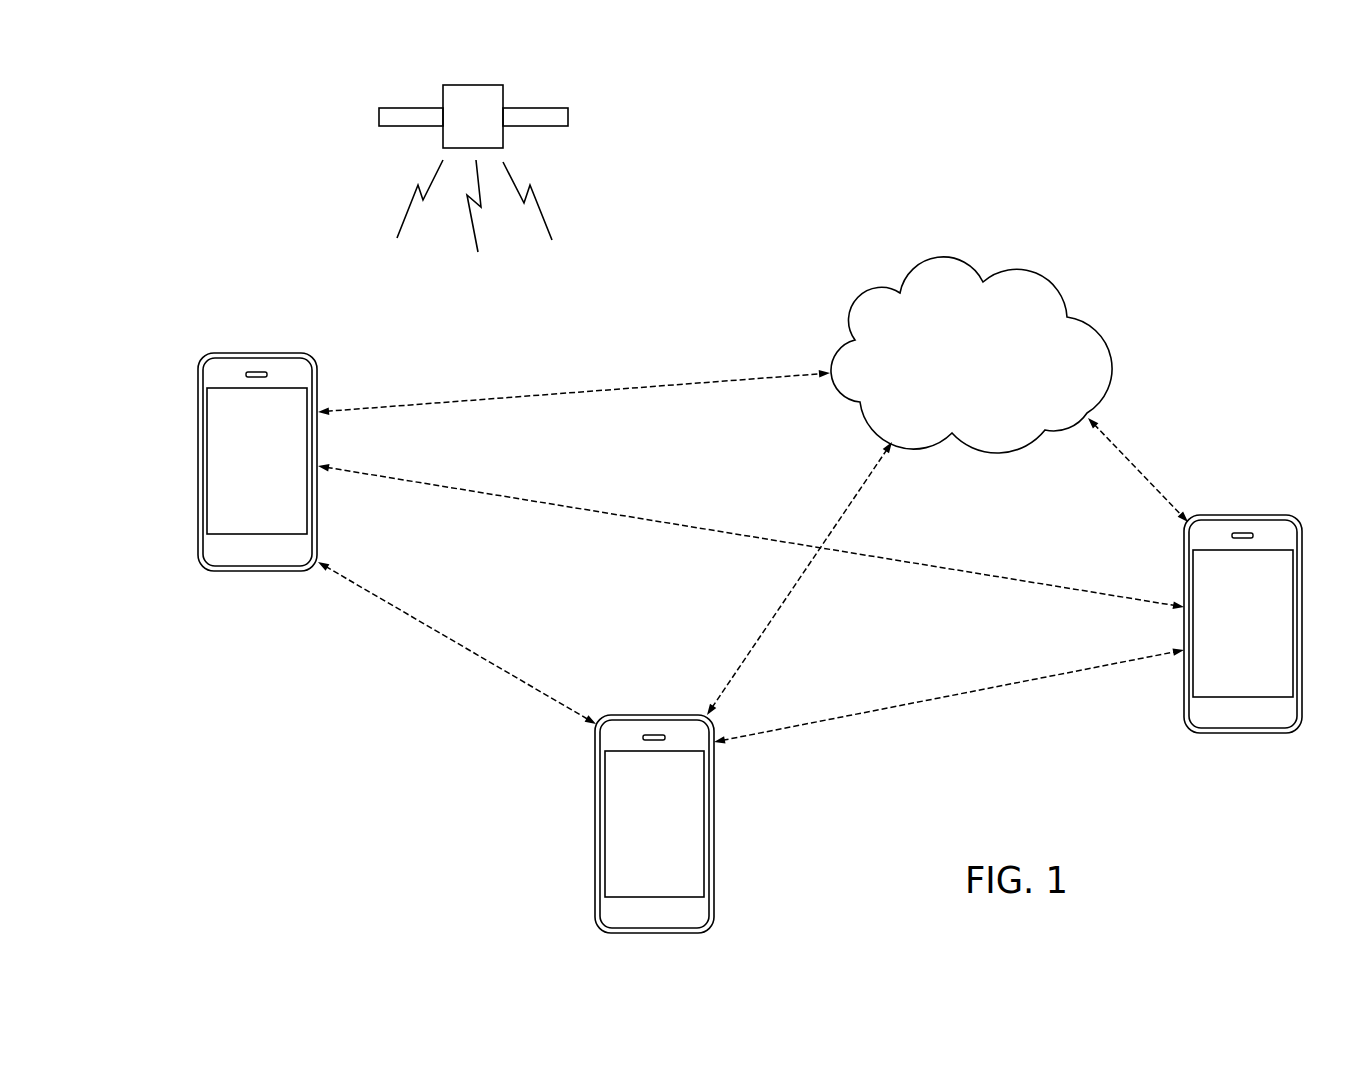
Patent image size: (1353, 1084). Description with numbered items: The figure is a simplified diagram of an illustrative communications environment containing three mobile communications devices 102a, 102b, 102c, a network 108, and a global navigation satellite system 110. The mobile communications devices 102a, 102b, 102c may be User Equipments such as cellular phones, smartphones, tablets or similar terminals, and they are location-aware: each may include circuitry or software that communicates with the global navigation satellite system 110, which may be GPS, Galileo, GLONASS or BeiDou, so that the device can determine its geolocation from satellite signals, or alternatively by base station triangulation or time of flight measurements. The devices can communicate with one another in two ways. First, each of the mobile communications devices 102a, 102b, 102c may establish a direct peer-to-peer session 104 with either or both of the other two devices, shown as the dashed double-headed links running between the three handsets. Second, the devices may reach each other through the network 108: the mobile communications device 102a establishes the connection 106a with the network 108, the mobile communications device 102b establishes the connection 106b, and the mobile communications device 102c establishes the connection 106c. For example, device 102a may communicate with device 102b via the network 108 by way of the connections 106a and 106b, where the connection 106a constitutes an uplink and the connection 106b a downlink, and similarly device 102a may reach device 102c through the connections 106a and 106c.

The mobile communications device 102a is at (198, 405).
The mobile communications device 102b is at (595, 766).
The mobile communications device 102c is at (1184, 565).
The peer-to-peer session 104 is at (600, 510).
The connection 106a is at (556, 395).
The connection 106b is at (858, 492).
The connection 106c is at (1138, 468).
The network 108 is at (853, 308).
The global navigation satellite system 110 is at (503, 95).